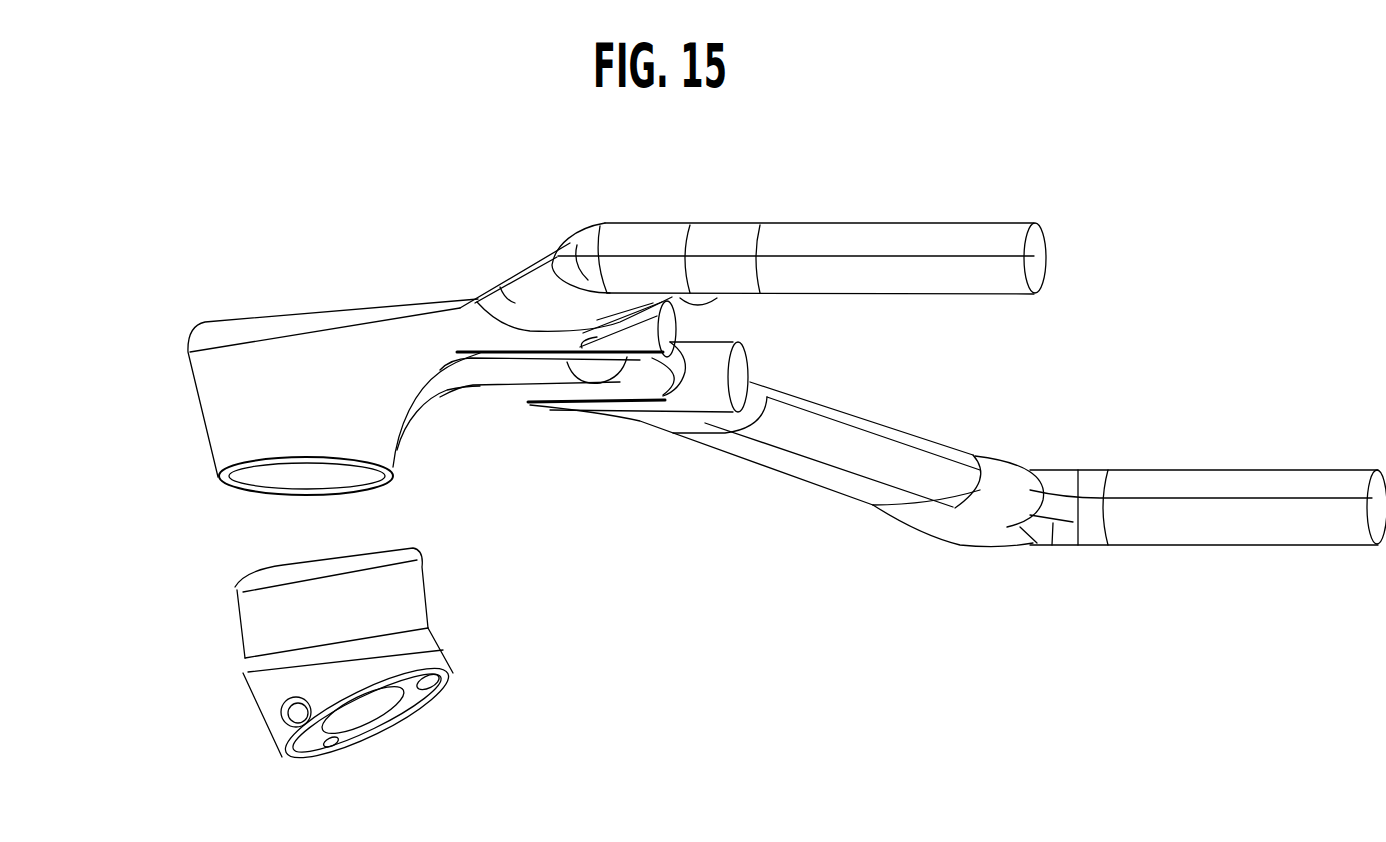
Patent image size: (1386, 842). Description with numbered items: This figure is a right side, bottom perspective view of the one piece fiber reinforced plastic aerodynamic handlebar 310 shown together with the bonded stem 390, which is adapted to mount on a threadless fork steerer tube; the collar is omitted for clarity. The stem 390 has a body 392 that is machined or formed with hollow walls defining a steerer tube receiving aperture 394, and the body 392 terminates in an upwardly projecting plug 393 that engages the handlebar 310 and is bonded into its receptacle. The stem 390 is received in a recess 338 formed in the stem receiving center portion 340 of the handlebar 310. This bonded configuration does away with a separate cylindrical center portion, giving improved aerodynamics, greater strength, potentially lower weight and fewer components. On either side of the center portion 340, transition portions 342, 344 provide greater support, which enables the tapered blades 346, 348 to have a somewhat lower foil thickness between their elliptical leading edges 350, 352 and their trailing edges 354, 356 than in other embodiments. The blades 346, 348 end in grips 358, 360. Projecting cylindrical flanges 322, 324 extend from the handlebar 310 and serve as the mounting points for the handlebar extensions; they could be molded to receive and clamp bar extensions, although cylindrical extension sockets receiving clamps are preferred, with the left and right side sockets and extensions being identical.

The handlebar 310 is at (481, 292).
The projecting cylindrical flange 322 is at (672, 332).
The projecting cylindrical flange 324 is at (753, 362).
The recess 338 is at (279, 478).
The stem receiving center portion 340 is at (217, 385).
The transition portion 342 is at (497, 338).
The transition portion 344 is at (640, 417).
The tapered blade 346 is at (682, 313).
The tapered blade 348 is at (866, 500).
The elliptical leading edge 350 is at (725, 297).
The elliptical leading edge 352 is at (951, 452).
The trailing edge 354 is at (528, 268).
The trailing edge 356 is at (828, 492).
The grip 358 is at (921, 233).
The grip 360 is at (1286, 480).
The stem 390 is at (247, 670).
The body 392 is at (263, 700).
The plug 393 is at (265, 618).
The steerer tube receiving aperture 394 is at (377, 713).